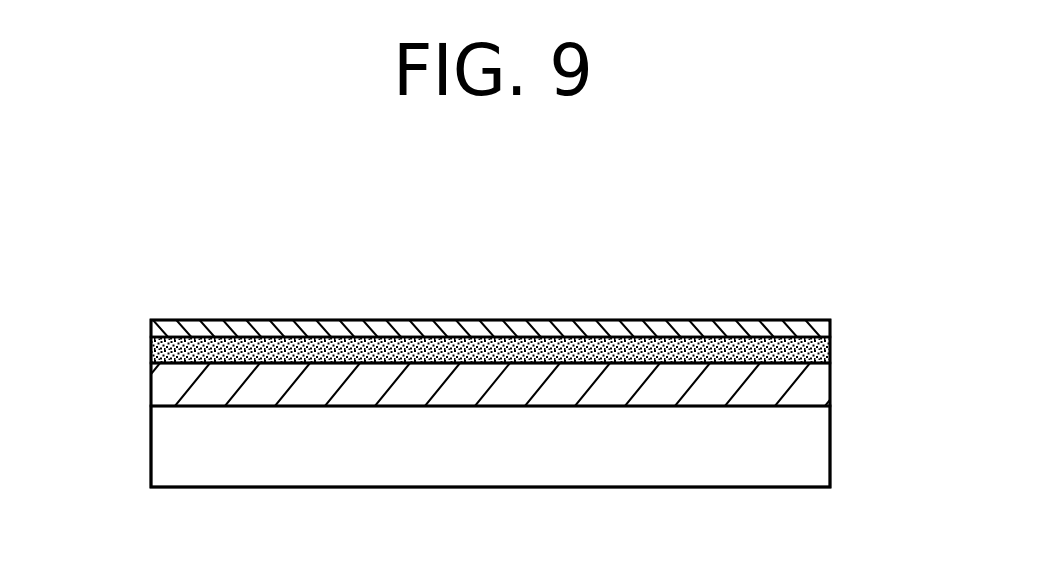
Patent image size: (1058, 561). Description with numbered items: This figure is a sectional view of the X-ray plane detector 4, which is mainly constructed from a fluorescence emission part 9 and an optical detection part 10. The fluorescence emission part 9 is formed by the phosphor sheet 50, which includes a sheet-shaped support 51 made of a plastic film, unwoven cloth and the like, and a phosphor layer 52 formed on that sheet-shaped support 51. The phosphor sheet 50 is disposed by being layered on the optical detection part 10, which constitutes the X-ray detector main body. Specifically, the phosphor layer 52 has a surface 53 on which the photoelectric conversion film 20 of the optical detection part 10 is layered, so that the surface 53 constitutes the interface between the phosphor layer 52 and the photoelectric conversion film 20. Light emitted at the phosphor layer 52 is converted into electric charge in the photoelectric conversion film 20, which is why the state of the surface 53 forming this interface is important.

The X-ray plane detector 4 is at (305, 236).
The fluorescence emission part 9 is at (529, 269).
The optical detection part 10 is at (496, 397).
The photoelectric conversion film 20 is at (193, 397).
The phosphor sheet 50 is at (497, 267).
The sheet-shaped support 51 is at (555, 331).
The phosphor layer 52 is at (608, 352).
The surface 53 is at (169, 366).